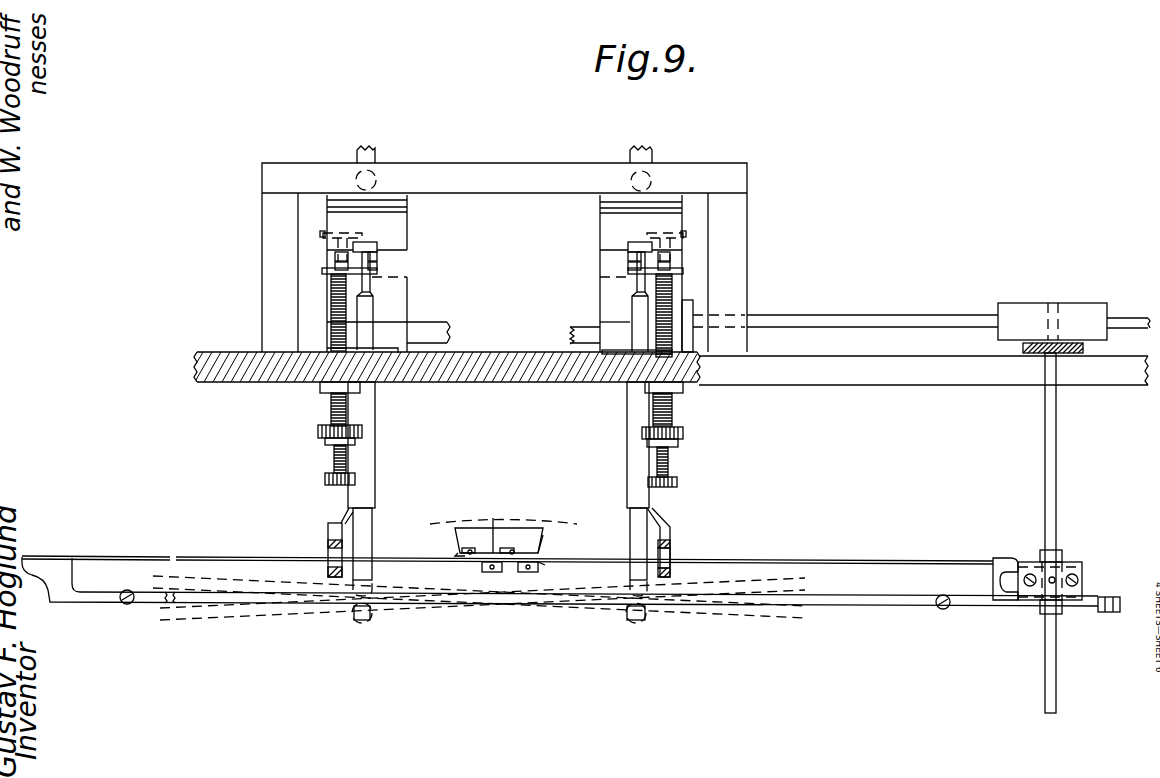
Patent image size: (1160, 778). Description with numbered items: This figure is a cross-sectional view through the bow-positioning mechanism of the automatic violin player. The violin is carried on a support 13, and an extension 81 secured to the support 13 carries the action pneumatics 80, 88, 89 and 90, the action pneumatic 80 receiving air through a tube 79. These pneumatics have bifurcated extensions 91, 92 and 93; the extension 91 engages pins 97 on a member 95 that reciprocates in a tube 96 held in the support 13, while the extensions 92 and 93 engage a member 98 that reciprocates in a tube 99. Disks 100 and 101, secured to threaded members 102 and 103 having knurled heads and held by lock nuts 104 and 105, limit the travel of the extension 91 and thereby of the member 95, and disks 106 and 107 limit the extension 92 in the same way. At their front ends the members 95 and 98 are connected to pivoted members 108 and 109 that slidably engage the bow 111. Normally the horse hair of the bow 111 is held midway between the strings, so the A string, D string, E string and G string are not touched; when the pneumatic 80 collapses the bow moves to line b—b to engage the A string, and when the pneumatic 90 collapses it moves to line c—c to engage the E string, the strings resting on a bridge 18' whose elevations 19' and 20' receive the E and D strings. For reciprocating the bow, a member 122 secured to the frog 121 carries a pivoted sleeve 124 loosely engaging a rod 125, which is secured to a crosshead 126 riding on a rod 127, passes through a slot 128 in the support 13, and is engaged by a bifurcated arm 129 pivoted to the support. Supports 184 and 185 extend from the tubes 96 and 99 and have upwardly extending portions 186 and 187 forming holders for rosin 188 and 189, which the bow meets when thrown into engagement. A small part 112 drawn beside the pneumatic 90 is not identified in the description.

The support 13 is at (491, 359).
The tube 79 is at (652, 156).
The action pneumatic 80 is at (602, 218).
The extension 81 is at (504, 180).
The action pneumatic 88 is at (400, 229).
The action pneumatic 89 is at (400, 300).
The action pneumatic 90 is at (605, 300).
The bifurcated extension 91 is at (630, 245).
The bifurcated extension 92 is at (368, 242).
The bifurcated extension 93 is at (372, 266).
The member 95 is at (631, 519).
The tube 96 is at (633, 420).
The pins 97 is at (340, 257).
The member 98 is at (366, 302).
The tube 99 is at (373, 458).
The disk 100 is at (684, 236).
The disk 101 is at (674, 296).
The threaded member 102 is at (684, 271).
The threaded member 103 is at (694, 306).
The lock nut 104 is at (684, 388).
The lock nut 105 is at (684, 434).
The disk 106 is at (322, 235).
The disk 107 is at (322, 271).
The pivoted member 108 is at (637, 622).
The pivoted member 109 is at (363, 622).
The bow 111 is at (903, 607).
The spring 112 is at (575, 330).
The frog 121 is at (1086, 570).
The member 122 is at (1022, 567).
The sleeve 124 is at (1040, 613).
The rod 125 is at (1050, 465).
The crosshead 126 is at (1068, 308).
The rod 127 is at (888, 322).
The slot 128 is at (802, 376).
The bifurcated arm 129 is at (1085, 349).
The support 184 is at (660, 523).
The support 185 is at (343, 515).
The upwardly extending portion 186 is at (671, 545).
The upwardly extending portion 187 is at (337, 577).
The rosin 188 is at (671, 558).
The rosin 189 is at (345, 556).
The A string A is at (512, 552).
The D string D is at (492, 576).
The E string E is at (528, 576).
The G string G is at (458, 553).
The line b— b is at (471, 596).
The line c— c is at (482, 603).
The bridge 18' is at (557, 541).
The elevation 19' is at (557, 569).
The elevation 20' is at (491, 524).